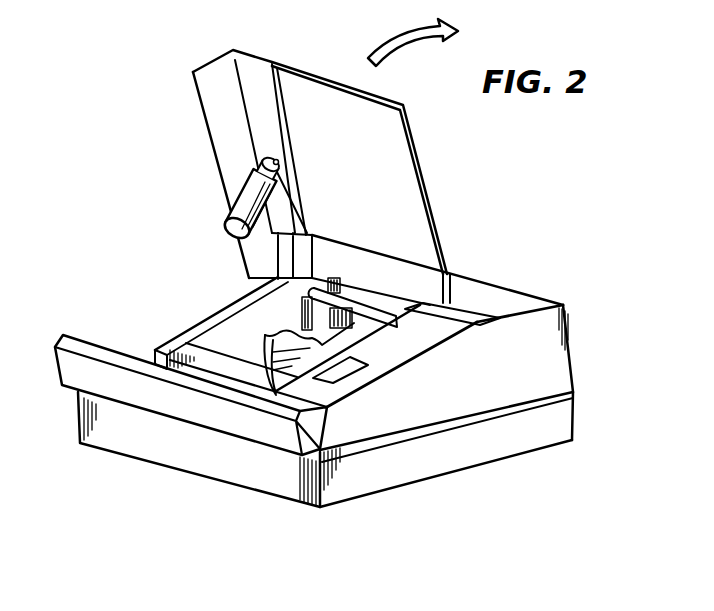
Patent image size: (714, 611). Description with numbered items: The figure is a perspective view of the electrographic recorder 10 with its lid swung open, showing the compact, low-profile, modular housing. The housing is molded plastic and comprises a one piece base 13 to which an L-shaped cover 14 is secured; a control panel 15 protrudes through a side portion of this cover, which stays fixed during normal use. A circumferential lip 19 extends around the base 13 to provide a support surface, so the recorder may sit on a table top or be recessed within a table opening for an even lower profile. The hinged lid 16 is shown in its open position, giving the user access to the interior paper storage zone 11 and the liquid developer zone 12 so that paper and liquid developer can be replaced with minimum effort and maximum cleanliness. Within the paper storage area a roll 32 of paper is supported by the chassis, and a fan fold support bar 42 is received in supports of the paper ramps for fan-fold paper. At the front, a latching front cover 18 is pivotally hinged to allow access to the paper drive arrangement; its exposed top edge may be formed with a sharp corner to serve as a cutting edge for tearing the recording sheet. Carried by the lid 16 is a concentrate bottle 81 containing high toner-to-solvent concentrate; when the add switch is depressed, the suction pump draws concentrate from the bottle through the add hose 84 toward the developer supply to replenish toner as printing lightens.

The electrographic recorder 10 is at (461, 225).
The paper storage zone 11 is at (252, 328).
The liquid developer zone 12 is at (170, 334).
The base 13 is at (515, 446).
The L-shaped cover 14 is at (437, 398).
The control panel 15 is at (345, 367).
The hinged lid 16 is at (303, 72).
The latching front cover 18 is at (75, 371).
The circumferential lip 19 is at (575, 392).
The roll of paper 32 is at (345, 350).
The fan fold support bar 42 is at (368, 308).
The concentrate bottle 81 is at (248, 201).
The add hose 84 is at (290, 212).